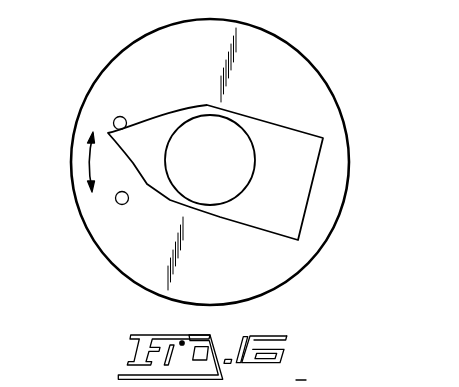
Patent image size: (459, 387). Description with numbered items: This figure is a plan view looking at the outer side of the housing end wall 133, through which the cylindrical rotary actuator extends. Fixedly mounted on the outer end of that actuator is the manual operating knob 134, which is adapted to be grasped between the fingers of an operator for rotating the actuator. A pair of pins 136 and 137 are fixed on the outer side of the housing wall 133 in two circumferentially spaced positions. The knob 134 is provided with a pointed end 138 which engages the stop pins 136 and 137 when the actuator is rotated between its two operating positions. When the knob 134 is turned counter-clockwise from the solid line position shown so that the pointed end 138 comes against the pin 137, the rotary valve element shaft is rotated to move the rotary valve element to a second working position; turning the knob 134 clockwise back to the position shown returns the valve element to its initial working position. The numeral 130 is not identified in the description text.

The disc 130 is at (352, 201).
The housing end wall 133 is at (310, 82).
The knob 134 is at (303, 146).
The pin 136 is at (121, 116).
The pin 137 is at (126, 205).
The pointed end 138 is at (130, 139).